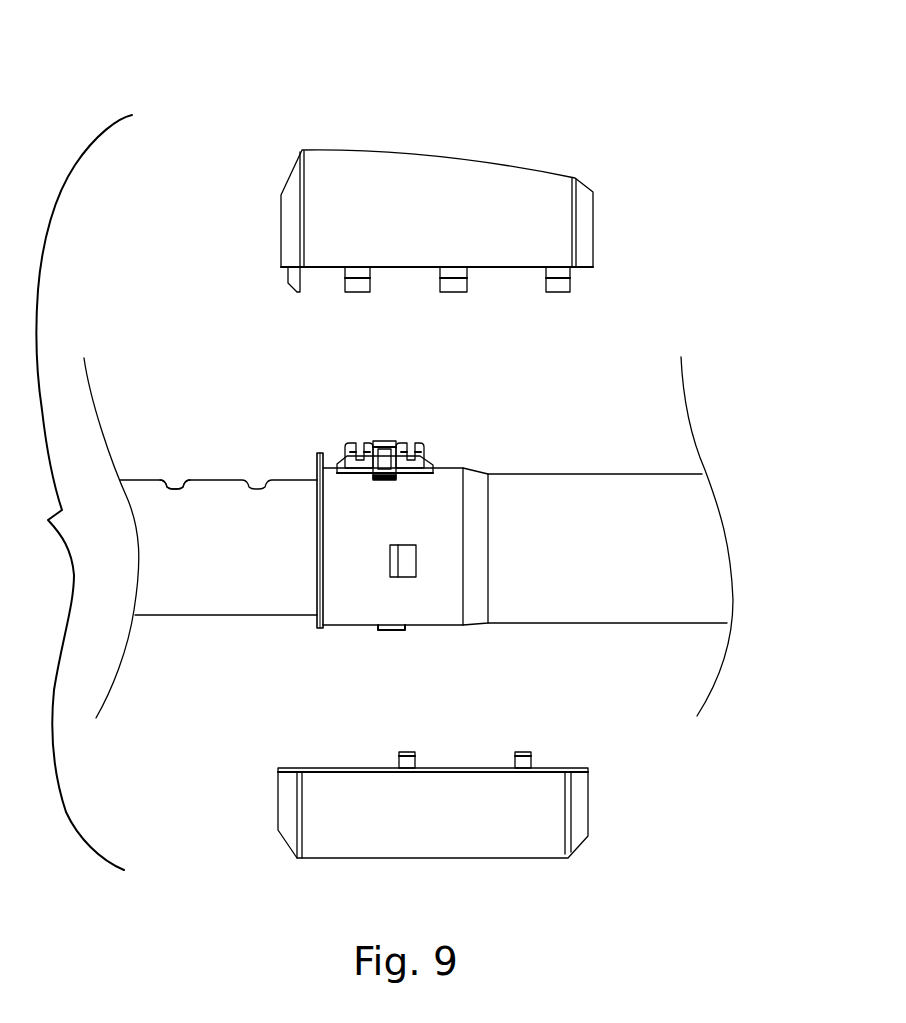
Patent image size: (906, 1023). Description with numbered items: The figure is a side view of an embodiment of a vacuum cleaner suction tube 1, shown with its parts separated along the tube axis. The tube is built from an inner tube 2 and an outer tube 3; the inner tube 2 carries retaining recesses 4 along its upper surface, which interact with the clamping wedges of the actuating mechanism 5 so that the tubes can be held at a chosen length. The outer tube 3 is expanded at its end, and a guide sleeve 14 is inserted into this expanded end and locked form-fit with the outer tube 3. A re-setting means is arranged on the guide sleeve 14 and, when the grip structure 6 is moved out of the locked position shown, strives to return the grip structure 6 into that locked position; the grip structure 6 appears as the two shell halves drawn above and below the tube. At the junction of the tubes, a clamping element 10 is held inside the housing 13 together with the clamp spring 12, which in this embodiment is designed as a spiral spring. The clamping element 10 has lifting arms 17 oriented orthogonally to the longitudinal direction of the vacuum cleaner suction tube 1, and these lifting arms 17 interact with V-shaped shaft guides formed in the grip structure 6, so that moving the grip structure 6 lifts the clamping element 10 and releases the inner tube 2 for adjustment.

The vacuum cleaner suction tube 1 is at (659, 258).
The inner tube 2 is at (189, 603).
The outer tube 3 is at (580, 500).
The retaining recesses 4 is at (176, 482).
The actuating mechanism 5 is at (262, 314).
The grip structure 6 is at (440, 172).
The clamping element 10 is at (432, 462).
The clamp spring 12 is at (384, 445).
The housing 13 is at (355, 446).
The guide sleeve 14 is at (318, 592).
The lifting arms 17 is at (402, 462).